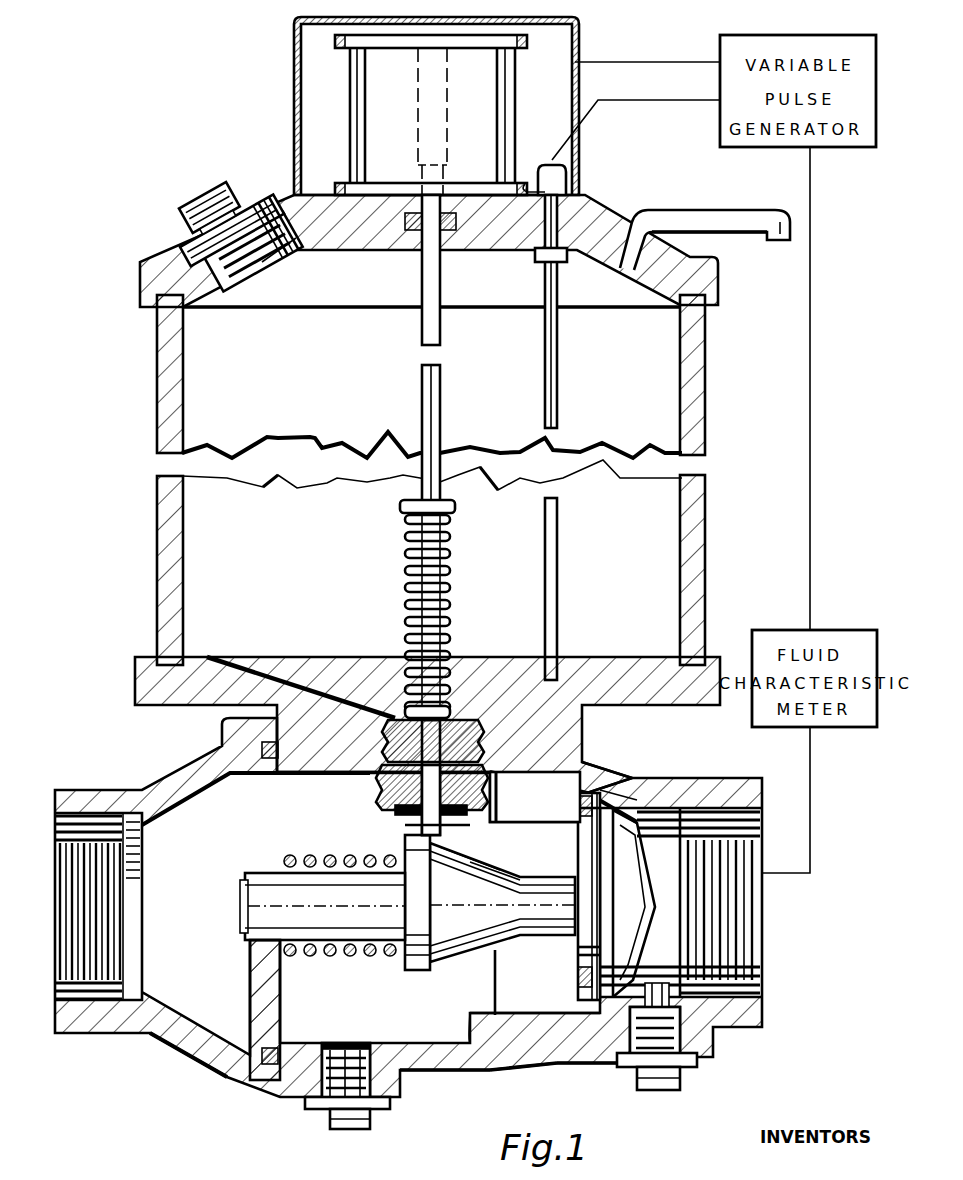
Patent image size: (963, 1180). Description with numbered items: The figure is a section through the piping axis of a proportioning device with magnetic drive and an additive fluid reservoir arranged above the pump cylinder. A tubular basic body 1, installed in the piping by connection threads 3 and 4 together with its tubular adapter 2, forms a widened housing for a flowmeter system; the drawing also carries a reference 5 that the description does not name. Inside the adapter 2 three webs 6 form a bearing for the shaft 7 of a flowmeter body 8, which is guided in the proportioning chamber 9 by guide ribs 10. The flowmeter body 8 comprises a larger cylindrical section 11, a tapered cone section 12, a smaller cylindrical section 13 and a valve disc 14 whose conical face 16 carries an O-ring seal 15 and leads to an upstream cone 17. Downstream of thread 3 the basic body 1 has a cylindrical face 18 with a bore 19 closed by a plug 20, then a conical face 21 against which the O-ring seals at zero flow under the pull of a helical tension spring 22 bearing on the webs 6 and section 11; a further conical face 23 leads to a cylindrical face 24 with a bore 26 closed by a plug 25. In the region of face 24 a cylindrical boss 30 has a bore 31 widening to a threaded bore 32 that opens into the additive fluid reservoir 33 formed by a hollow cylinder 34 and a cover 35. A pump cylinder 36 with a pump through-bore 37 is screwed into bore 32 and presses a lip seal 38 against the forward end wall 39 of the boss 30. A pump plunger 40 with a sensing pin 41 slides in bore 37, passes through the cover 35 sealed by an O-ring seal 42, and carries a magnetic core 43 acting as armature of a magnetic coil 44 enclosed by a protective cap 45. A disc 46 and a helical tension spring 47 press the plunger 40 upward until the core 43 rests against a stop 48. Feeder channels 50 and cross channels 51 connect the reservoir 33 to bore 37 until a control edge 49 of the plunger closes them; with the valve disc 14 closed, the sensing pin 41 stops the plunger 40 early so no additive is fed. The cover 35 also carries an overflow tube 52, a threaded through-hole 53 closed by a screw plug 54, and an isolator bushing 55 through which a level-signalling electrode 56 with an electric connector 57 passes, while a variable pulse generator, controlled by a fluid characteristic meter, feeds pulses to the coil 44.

The tubular basic body 1 is at (706, 790).
The tubular adapter 2 is at (160, 1033).
The connection thread 3 is at (760, 850).
The connection thread 4 is at (100, 815).
The support pillar 5 is at (276, 1065).
The webs 6 is at (262, 1052).
The shaft 7 is at (262, 904).
The flowmeter body 8 is at (432, 1015).
The proportioning chamber 9 is at (545, 1015).
The guide ribs 10 is at (577, 790).
The cylindrical section 11 is at (410, 977).
The tapered cone section 12 is at (450, 925).
The cylindrical section 13 is at (546, 900).
The valve disc 14 is at (630, 812).
The O-ring seal 15 is at (614, 812).
The conical face 16 is at (607, 1055).
The cone 17 is at (720, 937).
The cylindrical face 18 is at (657, 805).
The bore 19 is at (665, 1002).
The plug 20 is at (660, 1090).
The conical face 21 is at (617, 790).
The helical tension spring 22 is at (318, 958).
The conical face 23 is at (525, 1040).
The cylindrical face 24 is at (440, 1045).
The plug 25 is at (352, 1120).
The bore 26 is at (340, 1045).
The cylindrical boss 30 is at (380, 827).
The bore 31 is at (385, 840).
The threaded bore 32 is at (505, 722).
The additive fluid reservoir 33 is at (690, 612).
The hollow cylinder 34 is at (700, 478).
The cover 35 is at (612, 230).
The pump cylinder 36 is at (478, 720).
The pump through-bore 37 is at (395, 810).
The lip seal 38 is at (448, 845).
The forward end wall 39 is at (476, 845).
The pump plunger 40 is at (500, 775).
The sensing pin 41 is at (405, 872).
The O-ring seal 42 is at (448, 230).
The magnetic core 43 is at (418, 105).
The magnetic coil 44 is at (378, 147).
The protective cap 45 is at (585, 62).
The disc 46 is at (455, 506).
The helical tension spring 47 is at (452, 570).
The stop 48 is at (445, 50).
The control edge 49 is at (365, 715).
The feeder channels 50 is at (402, 718).
The cross channels 51 is at (385, 792).
The overflow tube 52 is at (737, 215).
The threaded through-hole 53 is at (280, 260).
The screw plug 54 is at (202, 228).
The isolator bushing 55 is at (542, 262).
The electrode 56 is at (560, 420).
The electric connector 57 is at (565, 168).